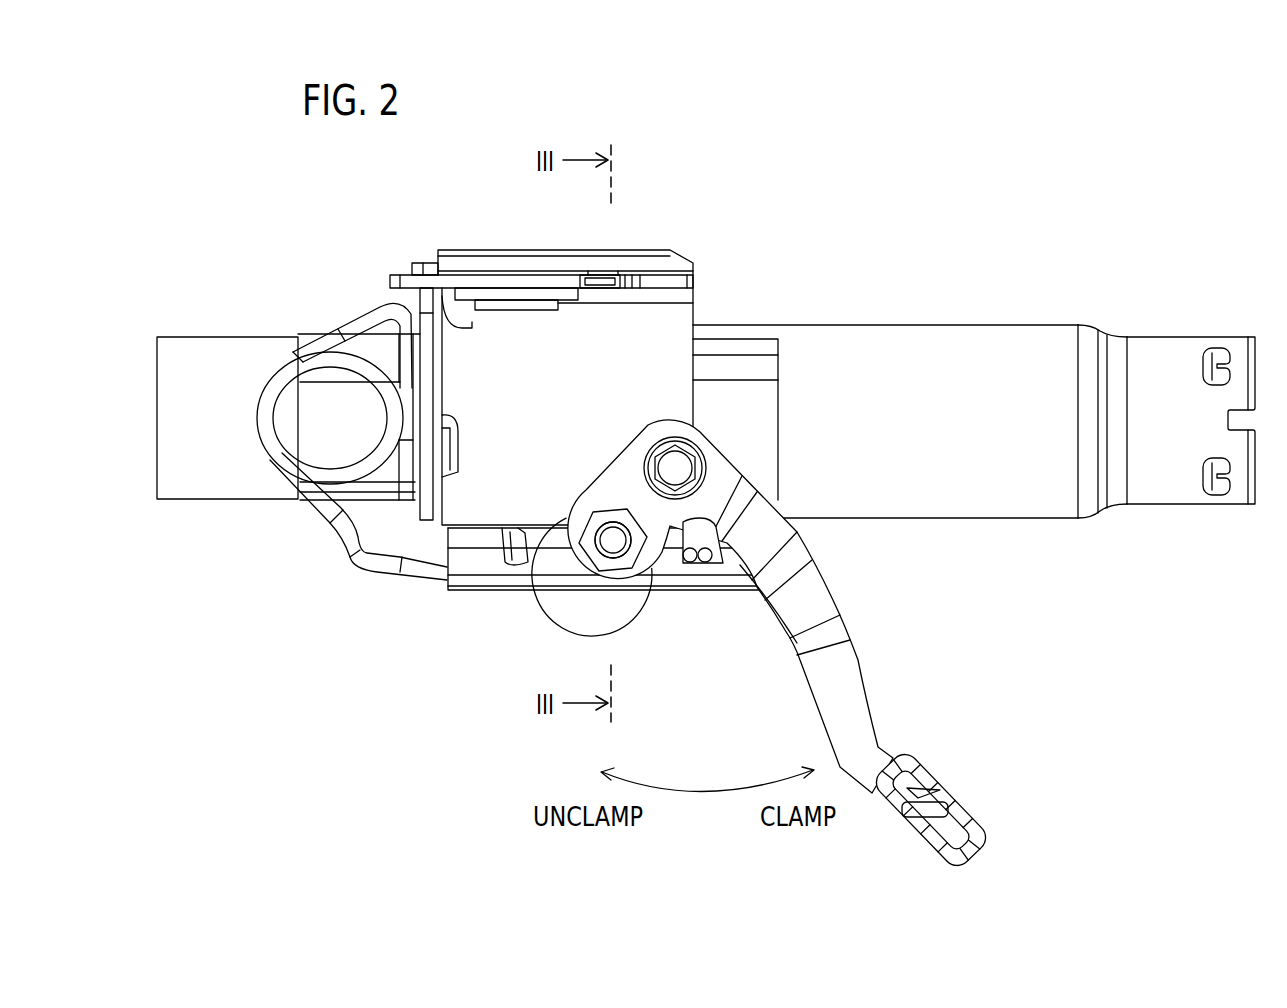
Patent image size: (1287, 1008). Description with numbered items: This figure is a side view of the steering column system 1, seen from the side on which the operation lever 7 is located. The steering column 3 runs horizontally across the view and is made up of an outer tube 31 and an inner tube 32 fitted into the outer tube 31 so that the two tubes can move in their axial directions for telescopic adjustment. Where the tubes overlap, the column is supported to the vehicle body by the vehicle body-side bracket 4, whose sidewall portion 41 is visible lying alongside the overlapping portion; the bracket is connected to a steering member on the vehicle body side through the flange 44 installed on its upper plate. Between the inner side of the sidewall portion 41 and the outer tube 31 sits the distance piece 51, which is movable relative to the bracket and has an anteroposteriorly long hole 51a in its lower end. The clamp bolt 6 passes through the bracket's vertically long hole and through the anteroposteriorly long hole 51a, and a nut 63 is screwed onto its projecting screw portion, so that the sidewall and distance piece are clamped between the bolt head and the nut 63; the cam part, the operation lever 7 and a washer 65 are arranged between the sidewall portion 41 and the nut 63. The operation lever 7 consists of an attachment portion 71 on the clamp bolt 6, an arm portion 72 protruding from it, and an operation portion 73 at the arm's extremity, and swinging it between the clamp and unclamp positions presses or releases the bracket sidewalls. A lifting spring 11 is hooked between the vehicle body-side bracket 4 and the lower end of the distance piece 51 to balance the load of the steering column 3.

The steering column system 1 is at (790, 148).
The steering column 3 is at (1005, 322).
The vehicle body-side bracket 4 is at (657, 337).
The clamp bolt 6 is at (604, 540).
The operation lever 7 is at (857, 670).
The lifting spring 11 is at (291, 457).
The outer tube 31 is at (918, 330).
The inner tube 32 is at (213, 338).
The sidewall portion 41 is at (500, 332).
The flange 44 is at (573, 262).
The distance piece 51 is at (744, 410).
The anteroposteriorly long hole 51a is at (723, 543).
The nut 63 is at (632, 557).
The washer 65 is at (622, 583).
The attachment portion 71 is at (606, 491).
The arm portion 72 is at (800, 532).
The operation portion 73 is at (965, 810).